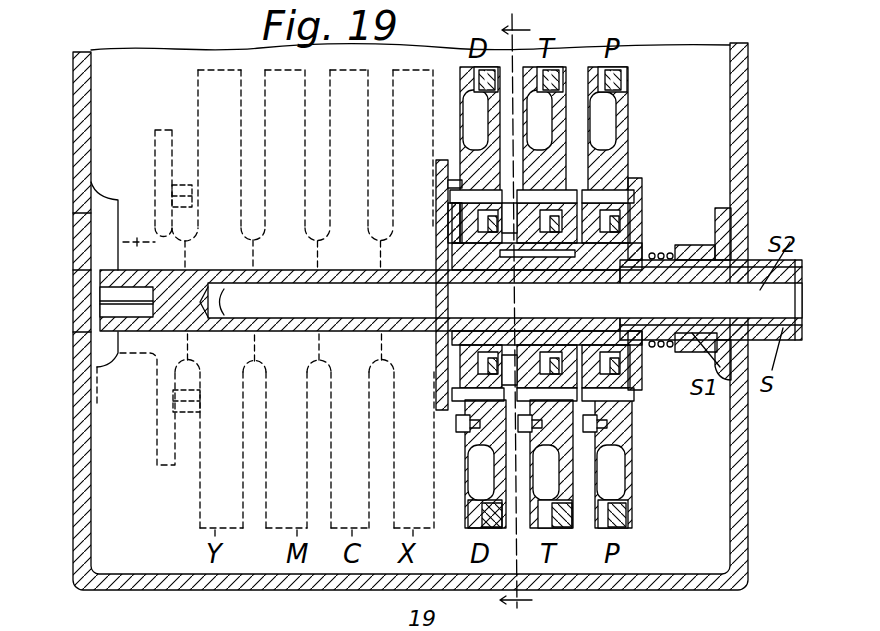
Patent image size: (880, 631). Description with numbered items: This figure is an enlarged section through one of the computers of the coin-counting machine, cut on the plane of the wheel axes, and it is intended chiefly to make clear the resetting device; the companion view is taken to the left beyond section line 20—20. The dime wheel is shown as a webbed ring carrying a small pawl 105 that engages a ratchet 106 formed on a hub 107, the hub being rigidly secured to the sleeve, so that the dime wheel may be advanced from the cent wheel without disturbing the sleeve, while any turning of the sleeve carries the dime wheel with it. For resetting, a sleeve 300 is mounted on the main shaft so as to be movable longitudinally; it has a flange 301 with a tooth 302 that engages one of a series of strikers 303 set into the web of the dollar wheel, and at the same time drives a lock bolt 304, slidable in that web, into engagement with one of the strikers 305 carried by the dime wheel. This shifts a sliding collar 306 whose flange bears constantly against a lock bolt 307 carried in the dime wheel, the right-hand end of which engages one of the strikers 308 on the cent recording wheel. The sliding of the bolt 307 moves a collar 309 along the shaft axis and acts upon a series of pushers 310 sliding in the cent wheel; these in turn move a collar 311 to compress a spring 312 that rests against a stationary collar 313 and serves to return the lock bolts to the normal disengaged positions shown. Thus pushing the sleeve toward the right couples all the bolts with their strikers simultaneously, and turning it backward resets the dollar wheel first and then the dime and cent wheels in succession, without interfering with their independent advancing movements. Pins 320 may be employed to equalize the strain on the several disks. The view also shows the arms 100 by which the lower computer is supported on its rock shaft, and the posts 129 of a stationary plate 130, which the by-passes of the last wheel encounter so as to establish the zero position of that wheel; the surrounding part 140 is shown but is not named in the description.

The housing 140 is at (80, 246).
The posts 129 is at (178, 188).
The arms 100 is at (141, 247).
The stationary plate 130 is at (187, 412).
The sleeve 300 is at (349, 278).
The flange 301 is at (440, 362).
The tooth 302 is at (455, 184).
The strikers 303 is at (465, 147).
The lock bolt 304 is at (455, 196).
The strikers 305 is at (478, 130).
The sliding collar 306 is at (452, 214).
The lock bolt 307 is at (628, 152).
The strikers 308 is at (628, 124).
The collar 309 is at (451, 300).
The pushers 310 is at (630, 177).
The collar 311 is at (643, 236).
The spring 312 is at (688, 340).
The stationary collar 313 is at (697, 243).
The pins 320 is at (462, 400).
The pawl 105 is at (520, 301).
The ratchet 106 is at (462, 238).
The hub 107 is at (550, 301).
The section line 20 is at (512, 317).